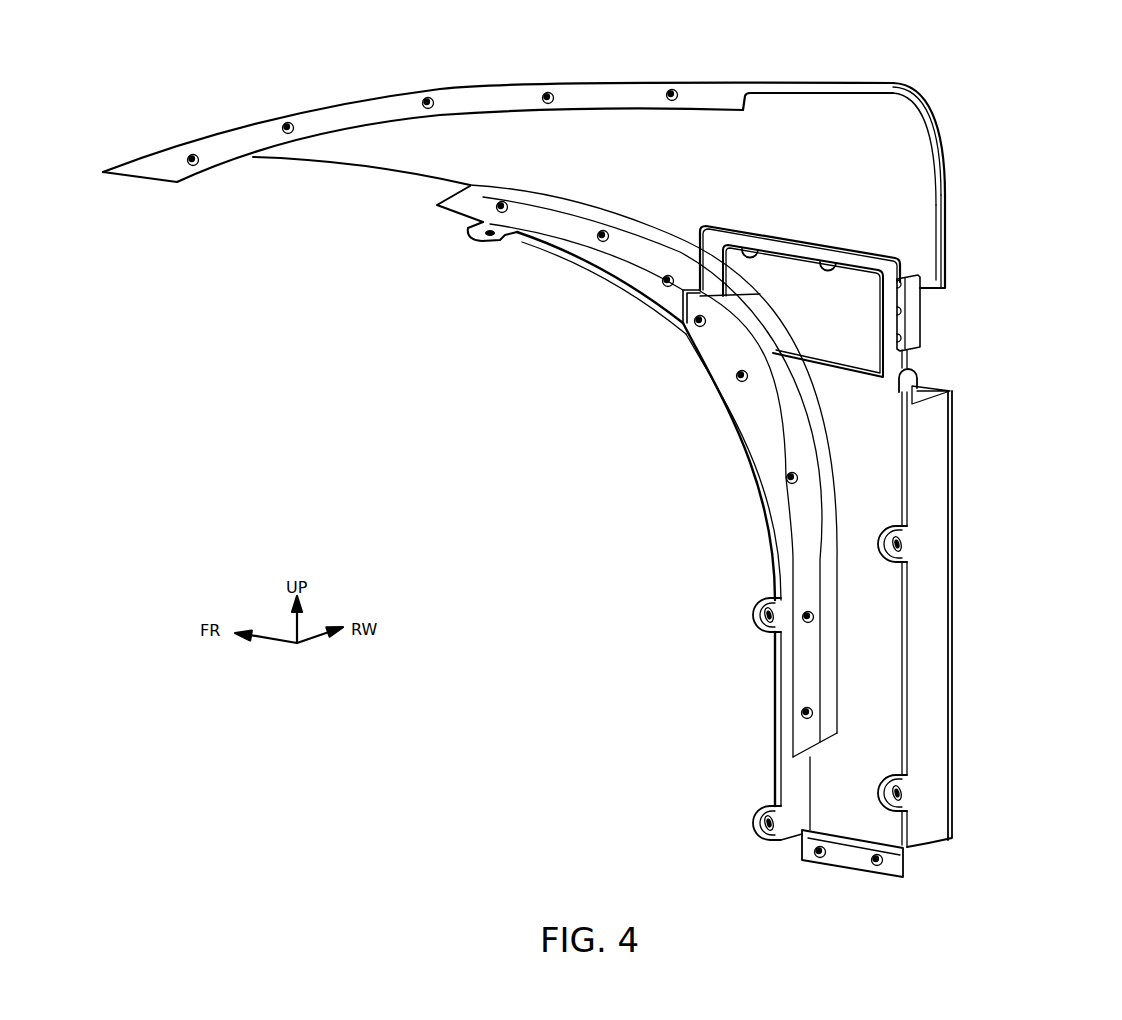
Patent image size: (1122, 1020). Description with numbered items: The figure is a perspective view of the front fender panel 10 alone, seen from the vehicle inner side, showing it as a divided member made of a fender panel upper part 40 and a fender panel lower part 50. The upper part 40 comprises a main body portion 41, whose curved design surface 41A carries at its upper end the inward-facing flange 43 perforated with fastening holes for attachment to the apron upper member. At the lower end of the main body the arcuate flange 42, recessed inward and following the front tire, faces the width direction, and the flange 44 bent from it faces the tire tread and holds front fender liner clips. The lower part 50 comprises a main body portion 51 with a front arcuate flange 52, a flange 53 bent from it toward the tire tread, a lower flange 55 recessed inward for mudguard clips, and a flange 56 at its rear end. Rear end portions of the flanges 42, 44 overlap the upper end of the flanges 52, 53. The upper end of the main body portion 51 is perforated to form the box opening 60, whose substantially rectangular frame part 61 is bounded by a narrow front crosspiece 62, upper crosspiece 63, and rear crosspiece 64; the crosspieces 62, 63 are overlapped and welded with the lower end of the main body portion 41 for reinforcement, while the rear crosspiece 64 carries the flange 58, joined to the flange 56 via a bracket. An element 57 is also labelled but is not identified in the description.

The front fender panel 10 is at (304, 415).
The fender panel upper part 40 is at (198, 122).
The main body portion 41 is at (905, 198).
The curved design surface 41A is at (943, 147).
The flange 42 is at (563, 223).
The flange 43 is at (352, 118).
The flange 44 is at (612, 262).
The fender panel lower part 50 is at (967, 719).
The main body portion 51 is at (865, 640).
The flange 52 is at (808, 663).
The flange 53 is at (786, 548).
The flange 55 is at (843, 857).
The flange 56 is at (928, 523).
The protruding portion 57 is at (916, 377).
The flange 58 is at (916, 300).
The box opening 60 is at (695, 298).
The frame part 61 is at (723, 338).
The front crosspiece 62 is at (693, 258).
The upper crosspiece 63 is at (733, 240).
The rear crosspiece 64 is at (890, 330).